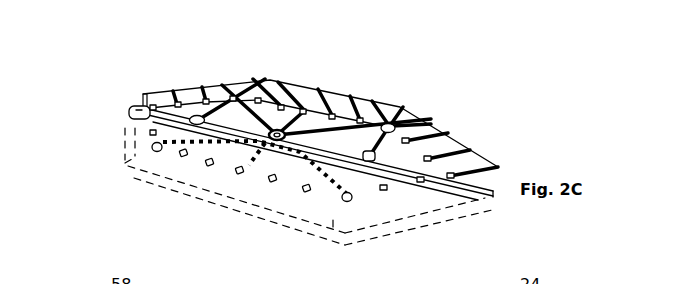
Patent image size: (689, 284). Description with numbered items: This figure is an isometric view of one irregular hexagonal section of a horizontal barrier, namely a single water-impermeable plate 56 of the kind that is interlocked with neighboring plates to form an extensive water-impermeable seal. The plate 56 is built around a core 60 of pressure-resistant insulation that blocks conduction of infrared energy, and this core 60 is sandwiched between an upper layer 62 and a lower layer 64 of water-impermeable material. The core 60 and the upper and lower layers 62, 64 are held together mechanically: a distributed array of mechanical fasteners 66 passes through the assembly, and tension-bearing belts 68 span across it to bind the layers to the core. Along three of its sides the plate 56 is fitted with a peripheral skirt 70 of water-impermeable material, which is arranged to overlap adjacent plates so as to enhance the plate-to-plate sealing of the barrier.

The irregular hexagonal plate 56 is at (313, 72).
The core 60 is at (129, 108).
The upper layer 62 is at (272, 117).
The lower layer 64 is at (146, 118).
The mechanical fasteners 66 is at (305, 191).
The tension-bearing belts 68 is at (343, 128).
The peripheral skirt 70 is at (446, 131).